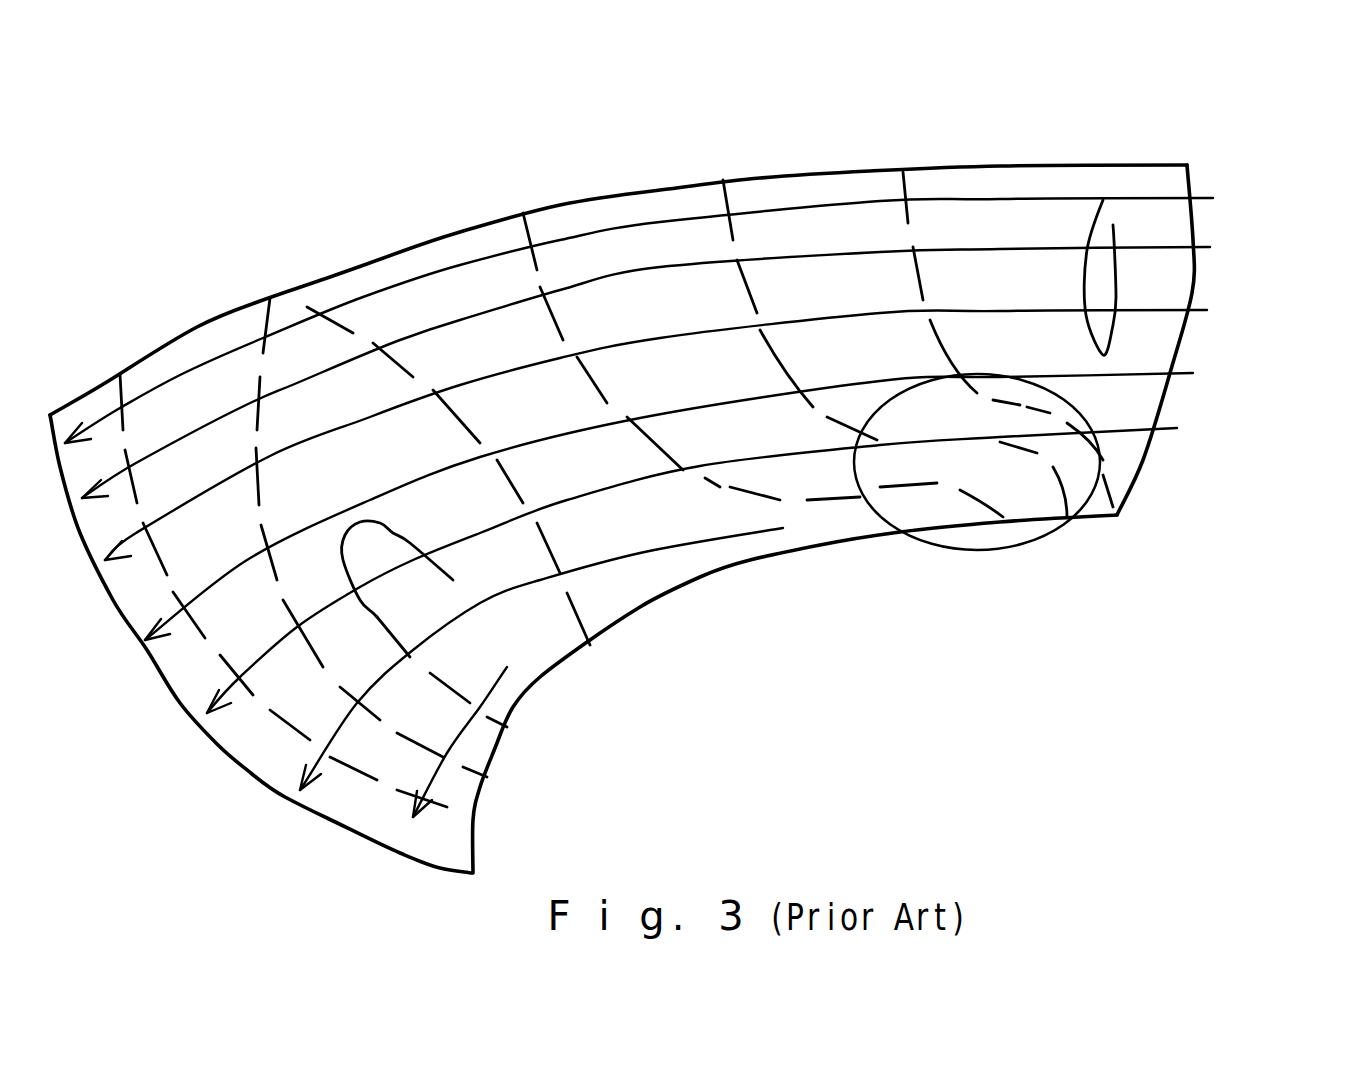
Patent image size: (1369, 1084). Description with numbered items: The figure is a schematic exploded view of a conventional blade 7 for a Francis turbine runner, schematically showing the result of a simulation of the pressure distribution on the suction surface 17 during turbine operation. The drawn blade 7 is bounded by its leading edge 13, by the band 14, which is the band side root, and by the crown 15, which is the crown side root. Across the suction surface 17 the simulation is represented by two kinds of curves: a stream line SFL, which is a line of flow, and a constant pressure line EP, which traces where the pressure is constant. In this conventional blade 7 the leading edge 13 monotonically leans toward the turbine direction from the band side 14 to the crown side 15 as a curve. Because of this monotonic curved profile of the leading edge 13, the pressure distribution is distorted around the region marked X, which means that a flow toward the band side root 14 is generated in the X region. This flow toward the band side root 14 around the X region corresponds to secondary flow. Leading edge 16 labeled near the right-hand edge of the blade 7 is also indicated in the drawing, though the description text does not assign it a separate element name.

The blade 7 is at (163, 250).
The leading edge 13 is at (697, 471).
The band (band side root) 14 is at (700, 583).
The crown (crown side root) 15 is at (680, 183).
The leading edge 16 is at (1197, 292).
The suction surface 17 is at (554, 425).
The constant pressure line EP is at (360, 330).
The stream line SFL is at (565, 235).
The X region X is at (985, 550).